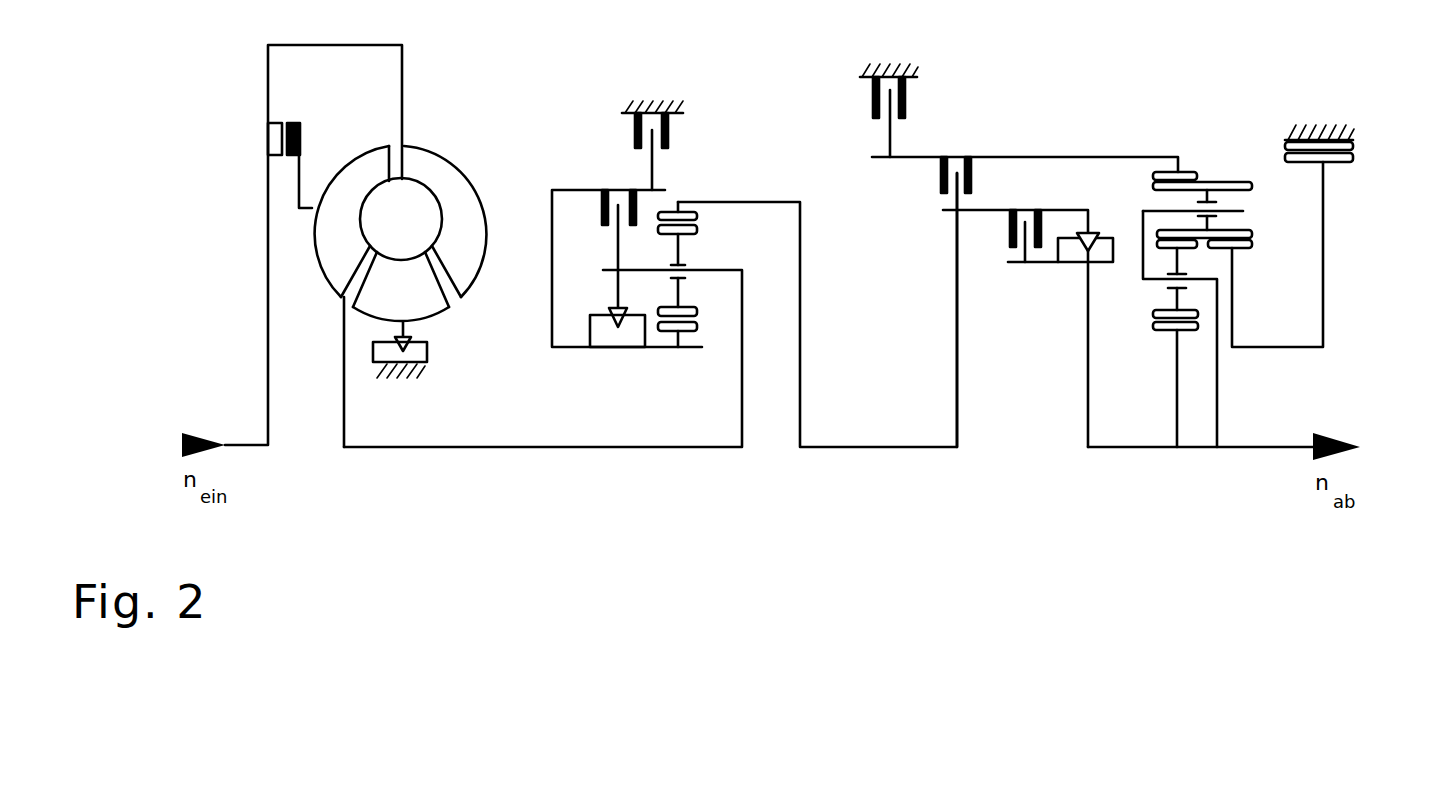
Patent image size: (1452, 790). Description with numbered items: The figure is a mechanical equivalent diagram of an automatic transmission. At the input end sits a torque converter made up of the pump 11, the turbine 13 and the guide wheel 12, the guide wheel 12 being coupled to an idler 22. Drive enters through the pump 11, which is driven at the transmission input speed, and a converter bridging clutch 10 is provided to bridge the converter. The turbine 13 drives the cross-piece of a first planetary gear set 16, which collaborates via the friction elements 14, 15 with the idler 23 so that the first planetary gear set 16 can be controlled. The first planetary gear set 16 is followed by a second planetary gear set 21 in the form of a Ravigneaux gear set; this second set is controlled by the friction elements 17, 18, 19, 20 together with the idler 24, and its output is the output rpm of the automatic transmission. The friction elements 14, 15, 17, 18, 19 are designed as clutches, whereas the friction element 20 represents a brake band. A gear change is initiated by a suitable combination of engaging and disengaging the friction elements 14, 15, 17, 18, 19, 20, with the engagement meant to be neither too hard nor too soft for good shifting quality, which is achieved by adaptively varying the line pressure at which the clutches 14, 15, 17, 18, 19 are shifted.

The converter bridging clutch 10 is at (290, 108).
The pump 11 is at (457, 152).
The guide wheel 12 is at (445, 313).
The turbine 13 is at (319, 286).
The friction element 14 is at (678, 136).
The friction element 15 is at (596, 207).
The first planetary gear set 16 is at (688, 358).
The friction element 17 is at (914, 103).
The friction element 18 is at (930, 181).
The friction element 19 is at (1000, 234).
The friction element 20 is at (1360, 172).
The second planetary gear set 21 is at (1219, 143).
The idler 22 is at (438, 353).
The idler 23 is at (627, 333).
The idler 24 is at (1076, 258).